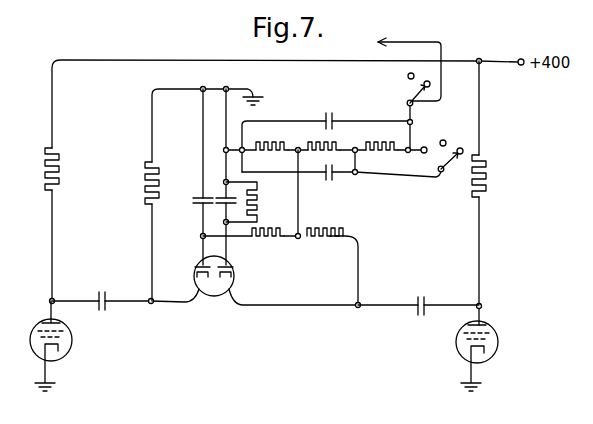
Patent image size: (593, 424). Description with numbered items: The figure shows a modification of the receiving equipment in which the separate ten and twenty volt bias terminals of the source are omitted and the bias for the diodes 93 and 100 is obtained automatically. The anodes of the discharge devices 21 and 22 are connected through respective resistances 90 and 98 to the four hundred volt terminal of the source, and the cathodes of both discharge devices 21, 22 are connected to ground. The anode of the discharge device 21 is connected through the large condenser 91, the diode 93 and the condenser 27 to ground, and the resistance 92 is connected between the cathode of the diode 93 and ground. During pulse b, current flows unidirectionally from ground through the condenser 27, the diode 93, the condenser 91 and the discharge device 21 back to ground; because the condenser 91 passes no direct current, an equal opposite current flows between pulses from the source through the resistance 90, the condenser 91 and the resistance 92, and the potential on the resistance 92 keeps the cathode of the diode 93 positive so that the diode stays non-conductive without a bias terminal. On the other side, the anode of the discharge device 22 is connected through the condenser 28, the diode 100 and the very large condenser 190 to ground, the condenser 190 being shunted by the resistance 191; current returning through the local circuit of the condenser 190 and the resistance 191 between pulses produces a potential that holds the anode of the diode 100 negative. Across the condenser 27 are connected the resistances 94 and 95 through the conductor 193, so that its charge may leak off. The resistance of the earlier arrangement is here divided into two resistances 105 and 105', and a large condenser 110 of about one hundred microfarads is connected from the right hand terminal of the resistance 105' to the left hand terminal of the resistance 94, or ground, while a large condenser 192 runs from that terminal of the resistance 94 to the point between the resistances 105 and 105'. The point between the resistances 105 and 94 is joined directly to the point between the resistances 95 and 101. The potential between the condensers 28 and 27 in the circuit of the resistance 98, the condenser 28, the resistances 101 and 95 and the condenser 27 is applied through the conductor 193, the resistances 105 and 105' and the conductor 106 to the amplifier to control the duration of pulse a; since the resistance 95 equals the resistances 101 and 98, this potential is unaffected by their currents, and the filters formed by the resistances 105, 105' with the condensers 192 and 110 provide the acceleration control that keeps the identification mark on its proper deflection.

The discharge device 21 is at (71, 343).
The discharge device 22 is at (497, 346).
The condenser 27 is at (197, 197).
The condenser 28 is at (417, 302).
The resistance 90 is at (44, 177).
The large condenser 91 is at (112, 297).
The resistance 92 is at (144, 188).
The diode 93 is at (192, 274).
The resistance 94 is at (270, 142).
The resistance 95 is at (281, 242).
The resistance 98 is at (488, 167).
The diode 100 is at (236, 271).
The resistance 101 is at (342, 236).
The resistance 105 is at (336, 137).
The resistance 105' is at (383, 137).
The conductor 106 is at (412, 40).
The large condenser 110 is at (333, 115).
The very large condenser 190 is at (234, 197).
The resistance 191 is at (258, 205).
The large condenser 192 is at (334, 178).
The conductor 193 is at (299, 200).